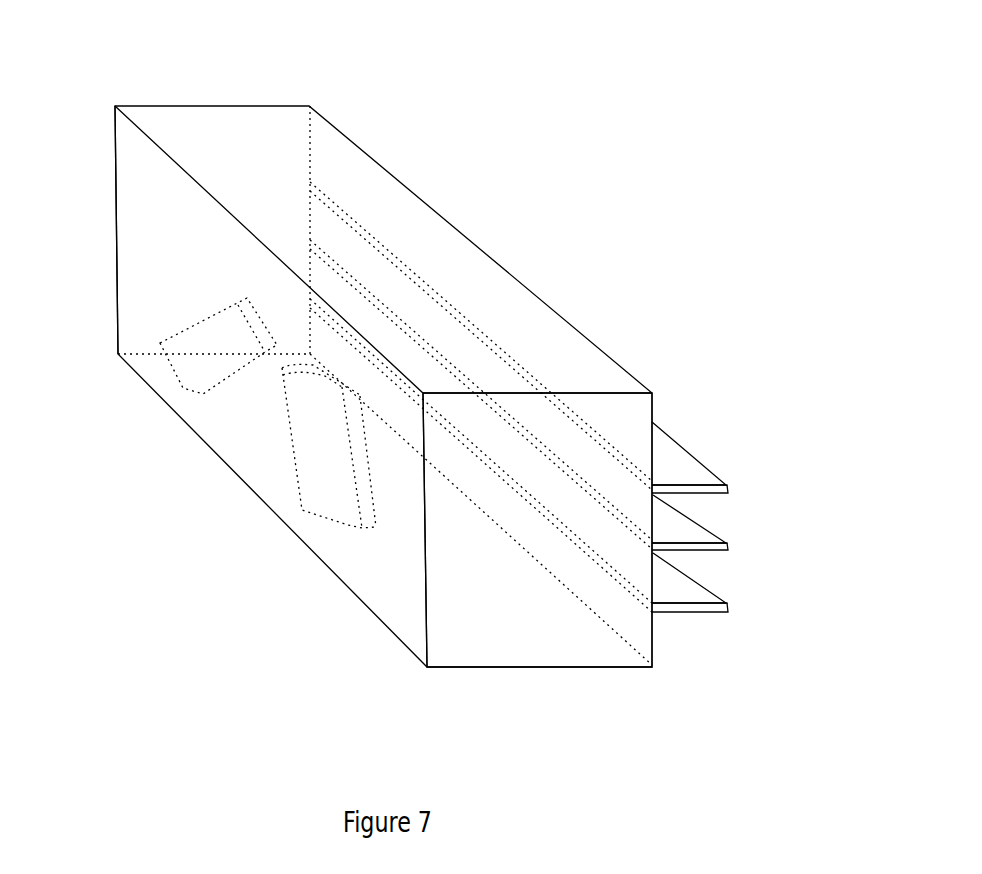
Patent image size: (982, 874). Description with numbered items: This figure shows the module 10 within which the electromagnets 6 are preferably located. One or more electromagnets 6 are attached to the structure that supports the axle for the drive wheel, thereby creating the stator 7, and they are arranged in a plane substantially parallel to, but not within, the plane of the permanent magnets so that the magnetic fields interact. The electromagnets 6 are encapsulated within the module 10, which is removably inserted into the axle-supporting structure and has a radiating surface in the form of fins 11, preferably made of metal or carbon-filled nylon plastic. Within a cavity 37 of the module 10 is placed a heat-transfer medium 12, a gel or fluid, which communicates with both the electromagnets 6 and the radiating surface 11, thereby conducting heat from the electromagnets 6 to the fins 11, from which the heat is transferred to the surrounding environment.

The module 10 is at (503, 201).
The stator 7 is at (196, 271).
The heat-transfer medium 12 is at (483, 578).
The cavity 37 is at (288, 320).
The electromagnets 6 is at (188, 372).
The fins 11 is at (707, 610).